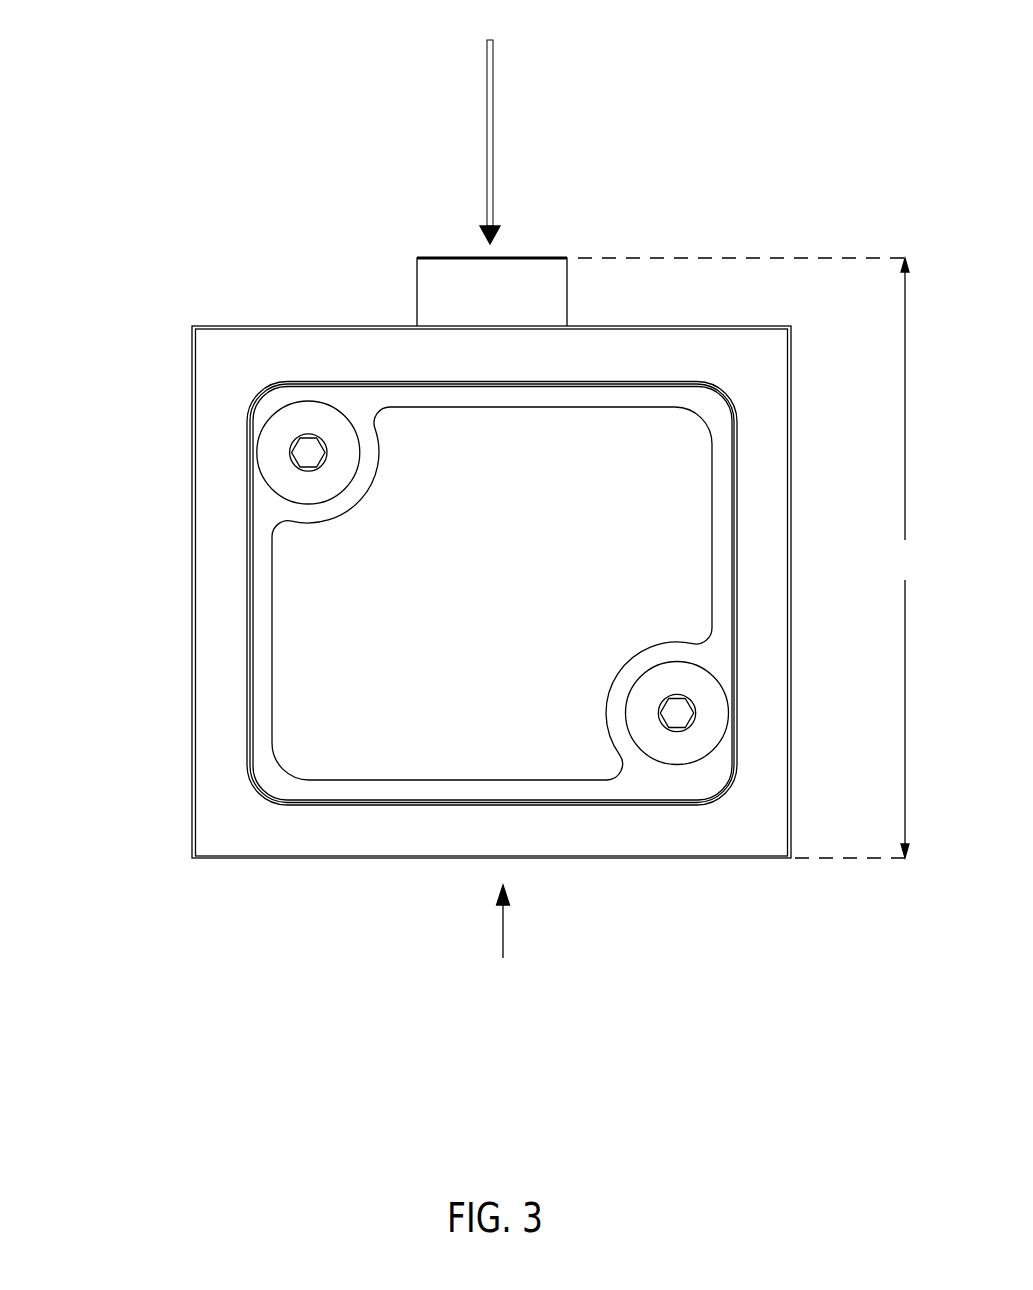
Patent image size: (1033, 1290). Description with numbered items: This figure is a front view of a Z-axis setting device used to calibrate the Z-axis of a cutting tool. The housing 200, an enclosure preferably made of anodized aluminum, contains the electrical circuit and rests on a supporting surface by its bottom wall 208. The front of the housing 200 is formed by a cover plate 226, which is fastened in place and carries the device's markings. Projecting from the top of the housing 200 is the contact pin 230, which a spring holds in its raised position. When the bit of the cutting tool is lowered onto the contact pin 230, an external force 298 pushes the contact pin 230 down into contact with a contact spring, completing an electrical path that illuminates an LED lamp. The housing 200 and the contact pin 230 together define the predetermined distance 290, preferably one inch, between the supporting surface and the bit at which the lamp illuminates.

The housing 200 is at (192, 521).
The bottom wall 208 is at (503, 946).
The cover plate 226 is at (285, 677).
The contact pin 230 is at (552, 257).
The predetermined distance 290 is at (751, 558).
The external force 298 is at (490, 126).